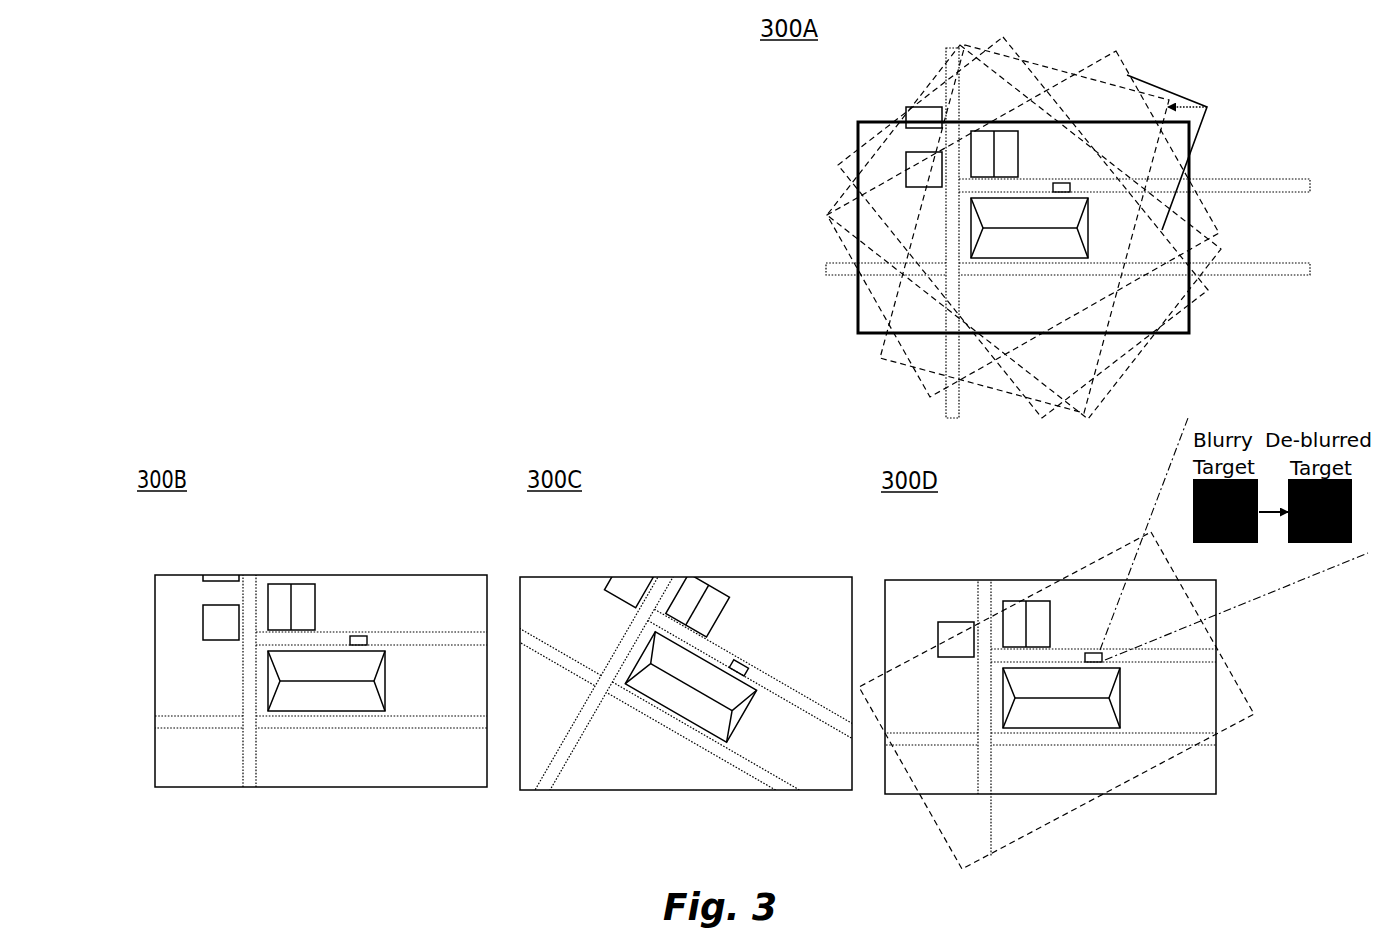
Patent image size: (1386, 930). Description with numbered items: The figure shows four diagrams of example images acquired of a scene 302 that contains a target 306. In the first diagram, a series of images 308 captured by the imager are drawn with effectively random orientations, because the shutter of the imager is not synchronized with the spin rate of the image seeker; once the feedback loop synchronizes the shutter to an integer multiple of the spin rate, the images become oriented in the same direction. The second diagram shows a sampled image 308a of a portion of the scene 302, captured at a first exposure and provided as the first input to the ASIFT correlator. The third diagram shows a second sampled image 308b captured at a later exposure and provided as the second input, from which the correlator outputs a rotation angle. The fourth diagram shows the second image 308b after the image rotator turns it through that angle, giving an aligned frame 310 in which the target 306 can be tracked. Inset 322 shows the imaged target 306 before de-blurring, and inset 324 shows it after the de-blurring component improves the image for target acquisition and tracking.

The scene 302 is at (918, 96).
The target 306 is at (1059, 181).
The images 308 is at (1205, 105).
The sampled image 308a is at (385, 573).
The second sampled image 308b is at (773, 575).
The registered image frame 310 is at (1218, 763).
The inset 322 is at (1210, 545).
The inset 324 is at (1314, 545).